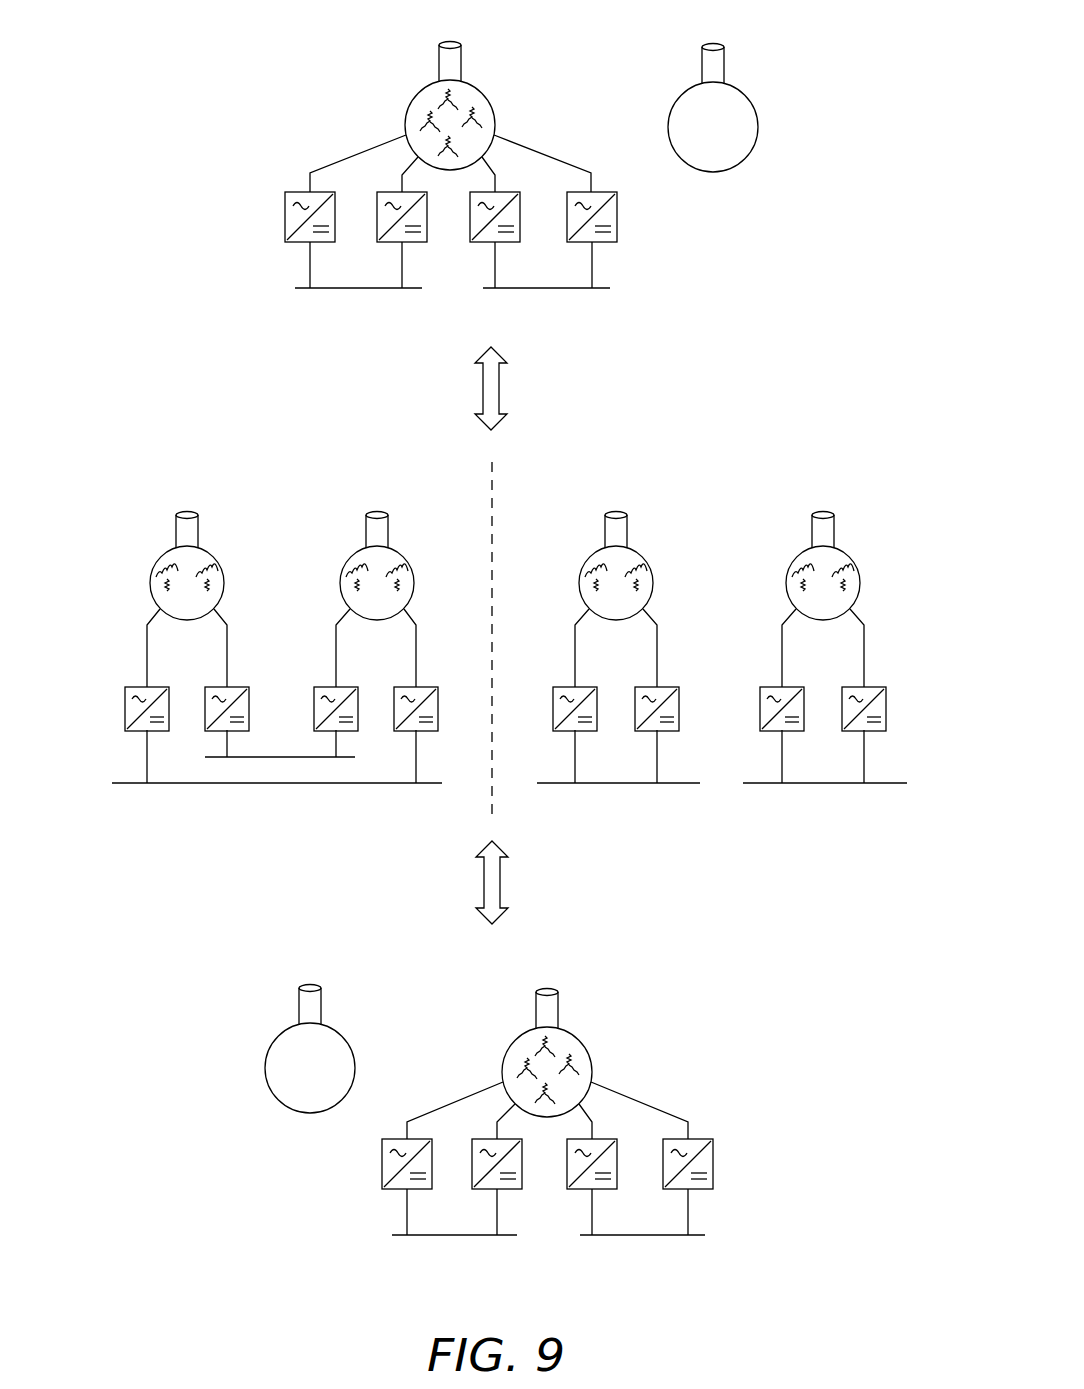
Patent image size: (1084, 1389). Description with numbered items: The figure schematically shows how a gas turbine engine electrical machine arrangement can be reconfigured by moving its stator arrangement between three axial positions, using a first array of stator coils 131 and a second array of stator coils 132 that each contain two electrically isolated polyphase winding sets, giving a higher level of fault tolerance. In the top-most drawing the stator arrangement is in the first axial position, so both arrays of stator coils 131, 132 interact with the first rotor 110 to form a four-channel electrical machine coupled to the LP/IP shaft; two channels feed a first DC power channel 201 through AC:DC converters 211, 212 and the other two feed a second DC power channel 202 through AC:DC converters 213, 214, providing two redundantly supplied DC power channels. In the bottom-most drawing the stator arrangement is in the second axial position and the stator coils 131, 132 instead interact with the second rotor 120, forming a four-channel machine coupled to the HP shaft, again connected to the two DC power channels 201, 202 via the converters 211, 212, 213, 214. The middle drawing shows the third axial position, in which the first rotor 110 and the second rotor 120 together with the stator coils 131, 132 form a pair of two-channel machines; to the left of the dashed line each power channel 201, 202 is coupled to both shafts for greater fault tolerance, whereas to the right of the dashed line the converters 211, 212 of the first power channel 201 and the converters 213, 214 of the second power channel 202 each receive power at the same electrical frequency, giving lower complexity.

The first rotor 110 is at (479, 90).
The second rotor 120 is at (758, 127).
The first array of stator coils 131 is at (428, 90).
The second array of stator coils 132 is at (430, 150).
The first DC power channel 201 is at (335, 290).
The second DC power channel 202 is at (552, 290).
The AC:DC converter 211 is at (285, 218).
The AC:DC converter 212 is at (420, 243).
The AC:DC converter 213 is at (473, 243).
The AC:DC converter 214 is at (617, 213).